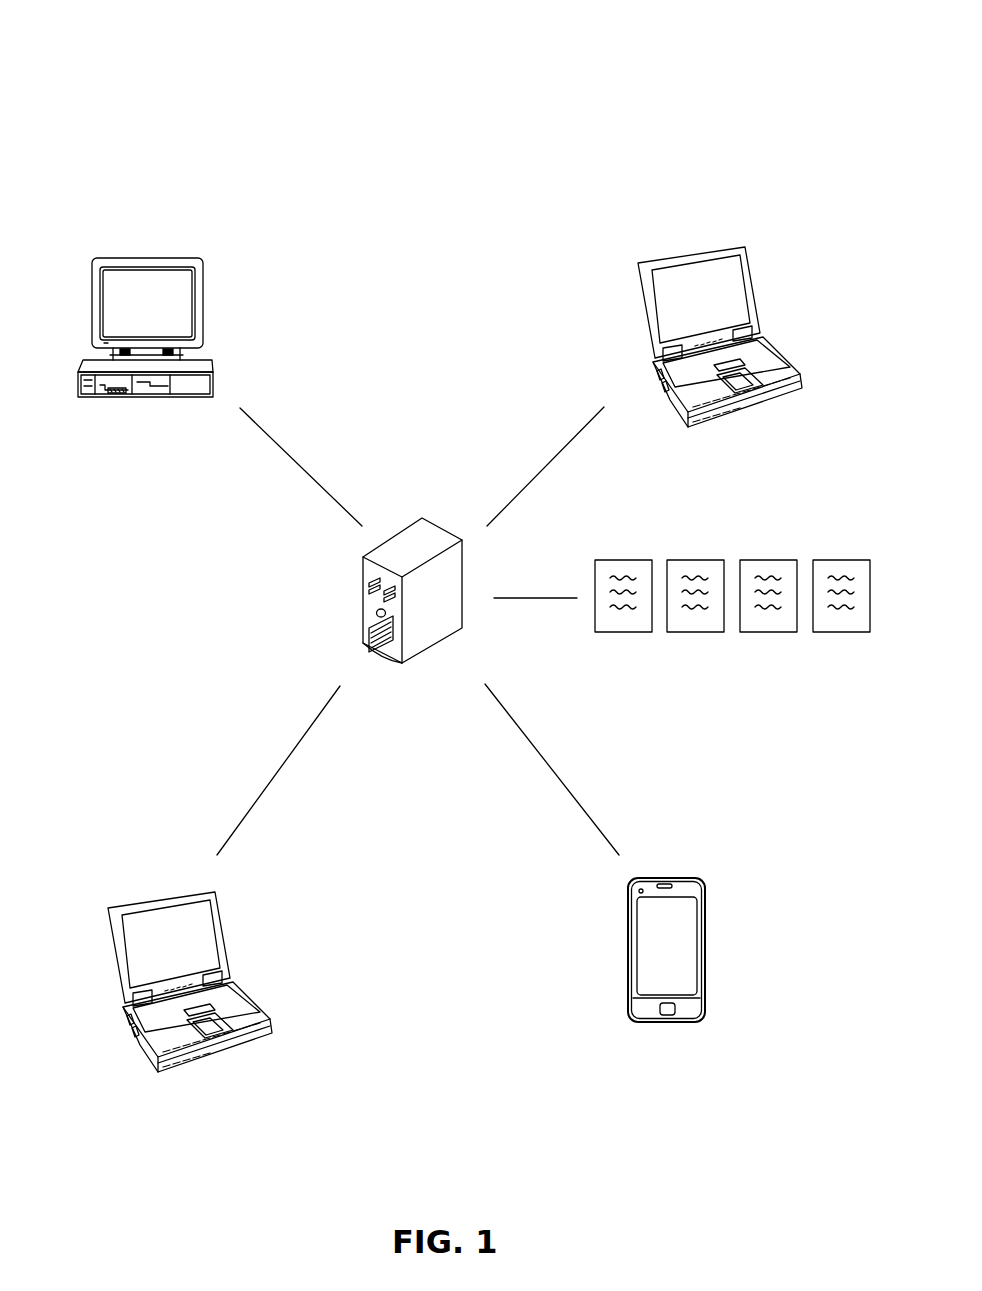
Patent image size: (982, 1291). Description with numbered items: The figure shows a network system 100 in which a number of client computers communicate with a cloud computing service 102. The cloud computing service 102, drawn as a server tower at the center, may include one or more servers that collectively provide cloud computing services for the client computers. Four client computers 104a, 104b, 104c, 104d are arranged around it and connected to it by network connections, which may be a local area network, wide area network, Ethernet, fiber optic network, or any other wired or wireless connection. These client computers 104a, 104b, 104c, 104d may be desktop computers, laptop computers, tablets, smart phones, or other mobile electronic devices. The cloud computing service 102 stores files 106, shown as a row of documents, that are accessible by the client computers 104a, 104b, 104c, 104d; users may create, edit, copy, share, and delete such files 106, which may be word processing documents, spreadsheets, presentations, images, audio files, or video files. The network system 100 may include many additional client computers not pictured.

The network system 100 is at (246, 64).
The cloud computing service 102 is at (422, 518).
The client computer 104a is at (120, 252).
The client computer 104b is at (685, 327).
The client computer 104c is at (155, 972).
The client computer 104d is at (673, 875).
The files 106 is at (730, 540).